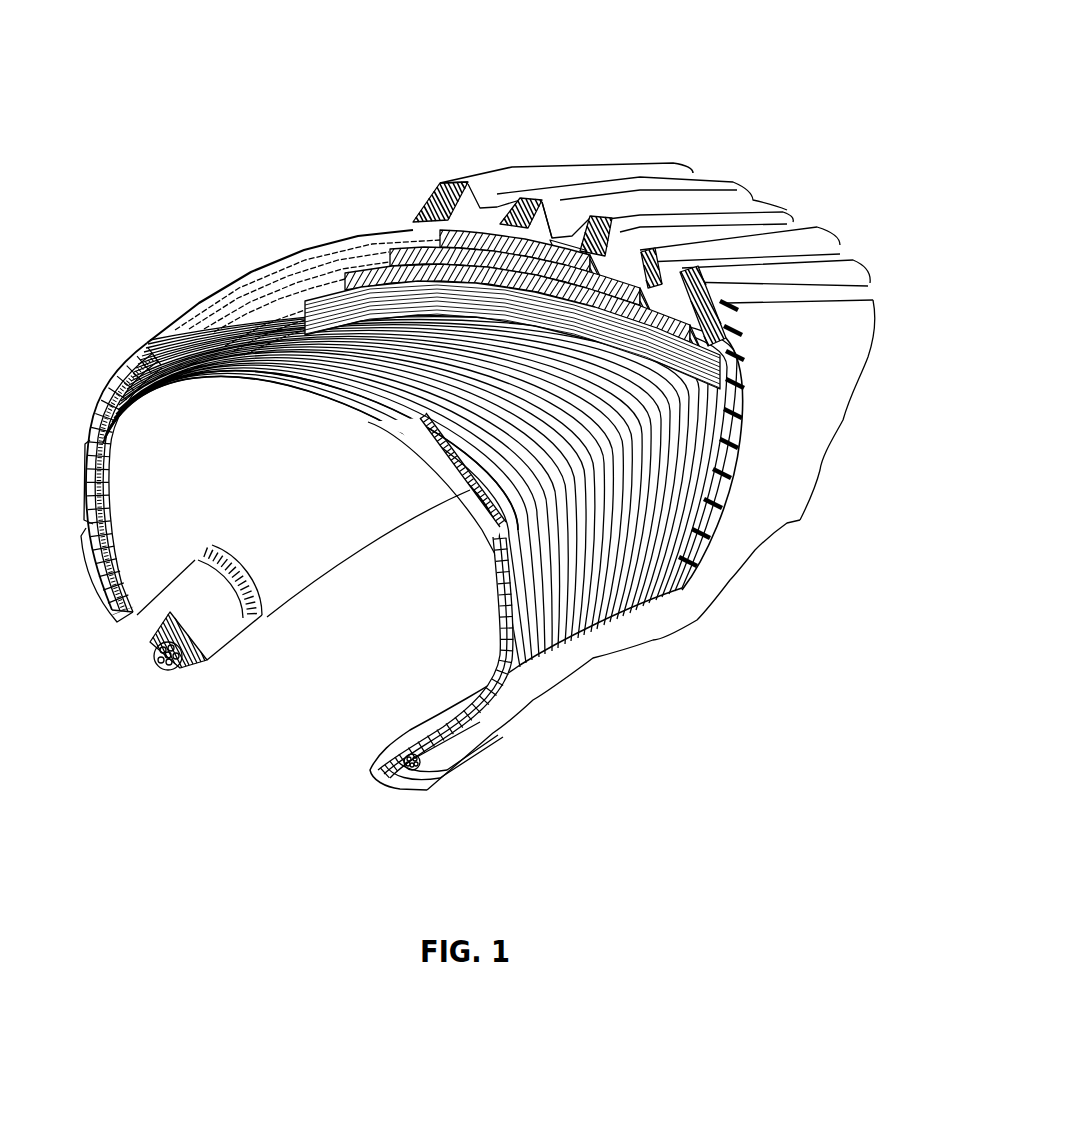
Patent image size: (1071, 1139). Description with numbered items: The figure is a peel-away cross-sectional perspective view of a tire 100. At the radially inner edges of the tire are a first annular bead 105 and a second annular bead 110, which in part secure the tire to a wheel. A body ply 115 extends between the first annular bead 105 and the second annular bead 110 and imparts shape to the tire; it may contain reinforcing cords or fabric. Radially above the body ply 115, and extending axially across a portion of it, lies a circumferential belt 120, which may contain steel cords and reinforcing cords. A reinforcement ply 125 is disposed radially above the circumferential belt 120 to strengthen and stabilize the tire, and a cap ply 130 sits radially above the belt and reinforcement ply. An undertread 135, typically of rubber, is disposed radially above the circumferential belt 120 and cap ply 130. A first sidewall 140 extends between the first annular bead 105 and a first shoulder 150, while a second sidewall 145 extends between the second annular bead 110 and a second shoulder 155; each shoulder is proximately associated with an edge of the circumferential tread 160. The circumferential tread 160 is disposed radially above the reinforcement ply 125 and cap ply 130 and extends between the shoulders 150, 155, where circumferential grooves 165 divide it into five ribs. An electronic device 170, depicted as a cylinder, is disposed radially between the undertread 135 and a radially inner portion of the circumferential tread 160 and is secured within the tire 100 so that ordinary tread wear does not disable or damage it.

The tire 100 is at (172, 42).
The first annular bead 105 is at (213, 633).
The second annular bead 110 is at (430, 767).
The body ply 115 is at (497, 577).
The circumferential belt 120 is at (312, 260).
The reinforcement ply 125 is at (350, 240).
The cap ply 130 is at (393, 230).
The undertread 135 is at (450, 227).
The first sidewall 140 is at (103, 573).
The second sidewall 145 is at (842, 400).
The first shoulder 150 is at (148, 343).
The second shoulder 155 is at (857, 330).
The circumferential tread 160 is at (503, 203).
The circumferential grooves 165 is at (547, 220).
The electronic device 170 is at (570, 243).